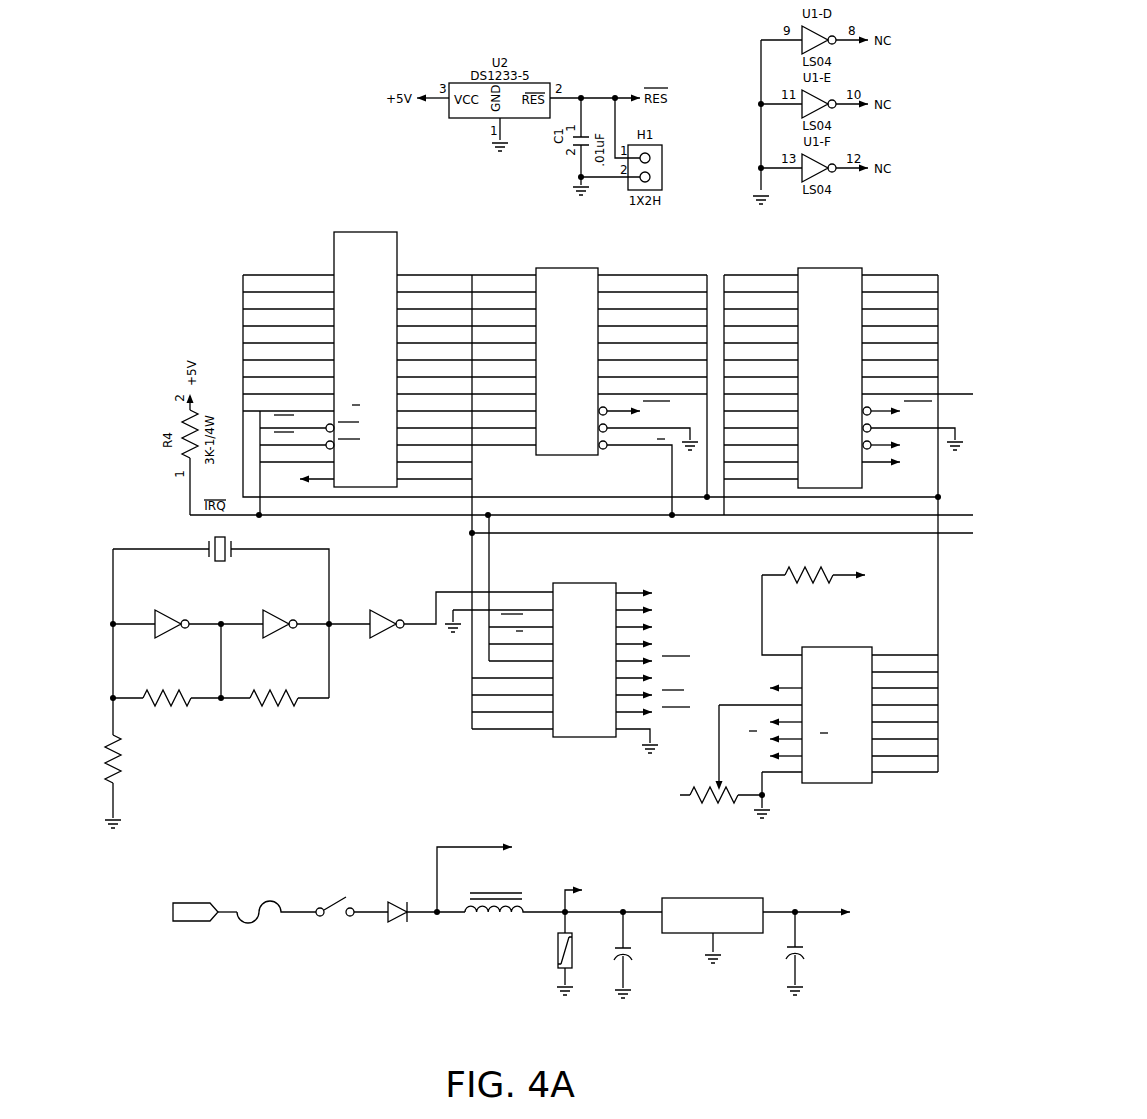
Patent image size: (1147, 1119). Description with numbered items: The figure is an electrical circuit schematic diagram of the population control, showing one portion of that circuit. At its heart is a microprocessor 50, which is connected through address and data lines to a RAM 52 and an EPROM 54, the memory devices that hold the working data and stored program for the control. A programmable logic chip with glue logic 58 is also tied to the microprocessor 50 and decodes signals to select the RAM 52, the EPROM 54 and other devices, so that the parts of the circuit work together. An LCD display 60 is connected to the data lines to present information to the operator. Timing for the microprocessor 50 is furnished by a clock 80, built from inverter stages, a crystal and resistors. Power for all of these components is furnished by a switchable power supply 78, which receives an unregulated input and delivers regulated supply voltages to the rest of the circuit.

The microprocessor 50 is at (352, 232).
The RAM 52 is at (540, 266).
The EPROM 54 is at (860, 267).
The programmable logic chip with glue logic 58 is at (553, 737).
The LCD display 60 is at (843, 785).
The switchable power supply 78 is at (848, 899).
The clock 80 is at (306, 738).